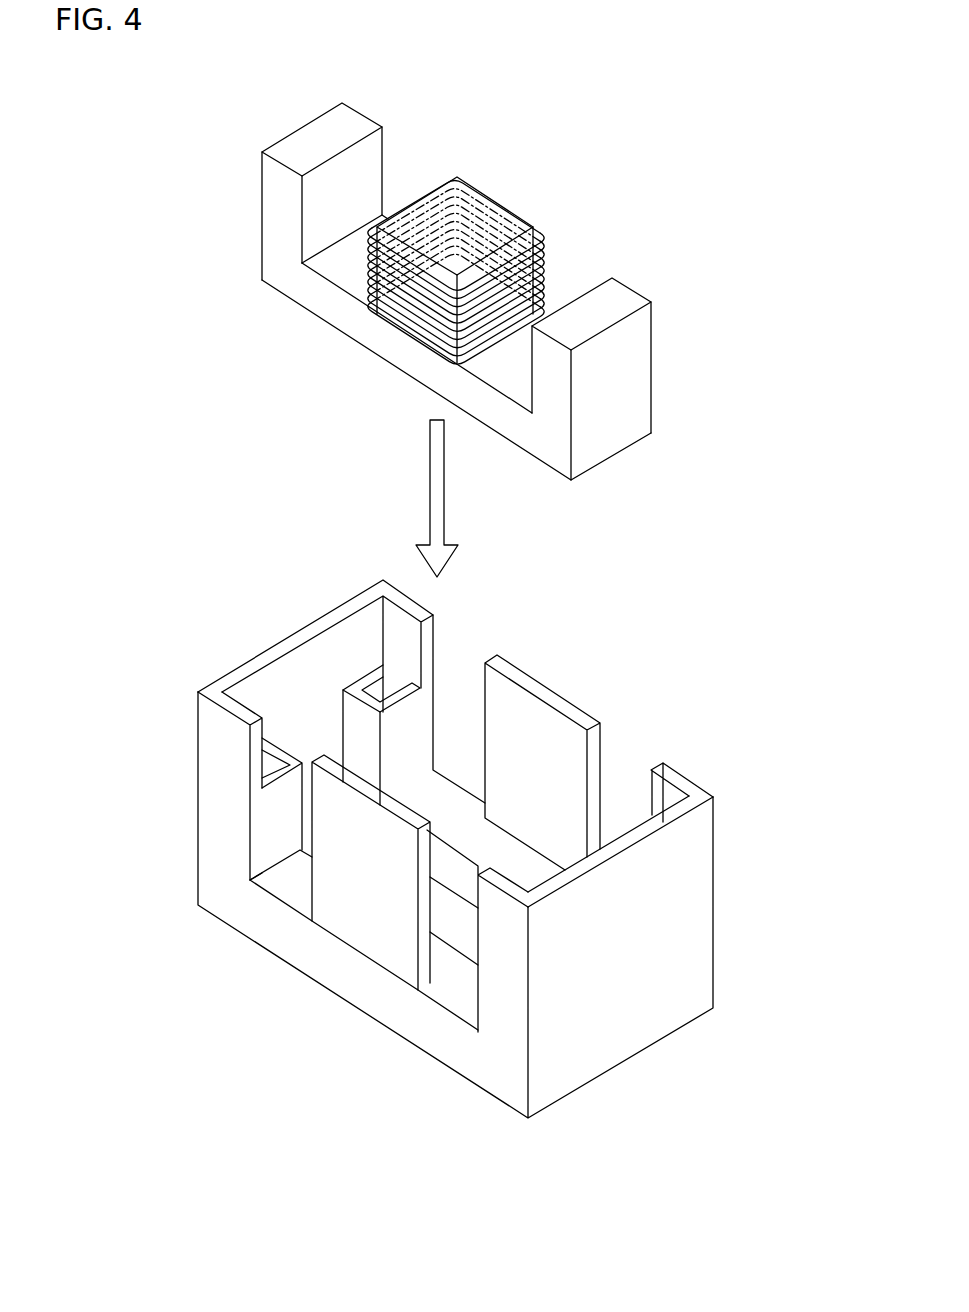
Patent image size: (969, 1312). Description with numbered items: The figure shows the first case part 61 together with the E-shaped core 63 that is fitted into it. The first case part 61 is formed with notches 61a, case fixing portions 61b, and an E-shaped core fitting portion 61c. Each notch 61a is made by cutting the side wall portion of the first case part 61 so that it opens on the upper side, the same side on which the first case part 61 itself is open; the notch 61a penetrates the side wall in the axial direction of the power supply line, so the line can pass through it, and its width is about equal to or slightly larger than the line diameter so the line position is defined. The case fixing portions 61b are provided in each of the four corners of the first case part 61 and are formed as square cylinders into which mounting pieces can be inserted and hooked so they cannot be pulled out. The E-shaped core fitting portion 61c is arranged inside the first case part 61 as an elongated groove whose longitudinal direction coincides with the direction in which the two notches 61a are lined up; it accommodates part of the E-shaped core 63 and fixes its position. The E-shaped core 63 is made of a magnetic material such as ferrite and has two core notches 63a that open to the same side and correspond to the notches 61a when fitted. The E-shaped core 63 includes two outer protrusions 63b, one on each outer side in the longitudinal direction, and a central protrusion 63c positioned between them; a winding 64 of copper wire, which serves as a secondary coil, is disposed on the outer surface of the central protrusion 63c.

The first case part 61 is at (272, 620).
The notch 61a is at (252, 850).
The case fixing portion 61b is at (388, 688).
The E-shaped core fitting portion 61c is at (292, 757).
The E-shaped core 63 is at (630, 177).
The core notch 63a is at (316, 212).
The outer protrusion 63b is at (308, 140).
The central protrusion 63c is at (485, 210).
The winding 64 is at (556, 250).